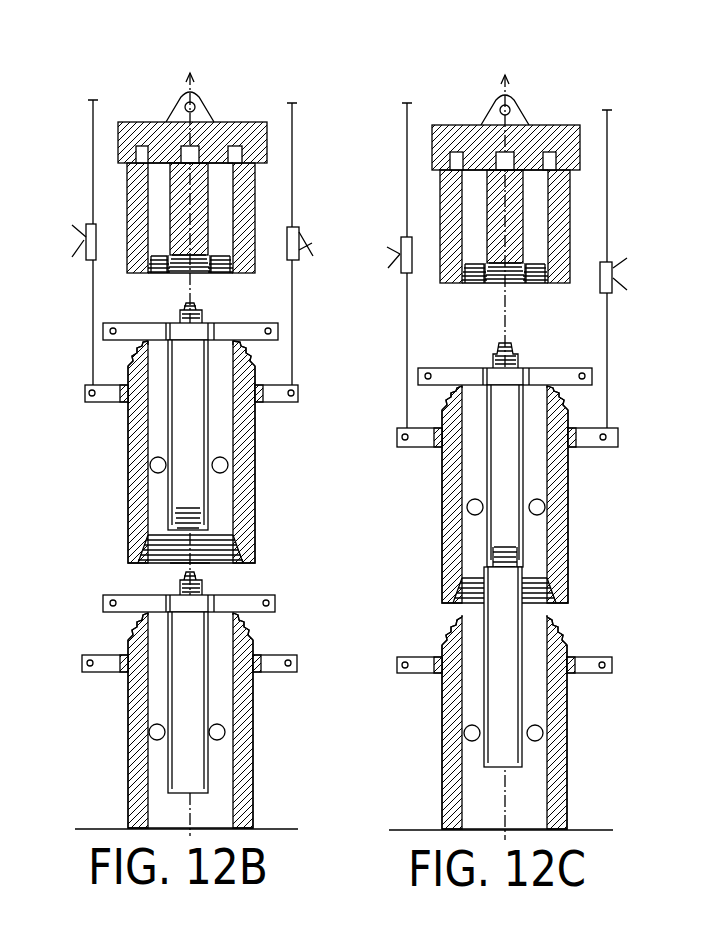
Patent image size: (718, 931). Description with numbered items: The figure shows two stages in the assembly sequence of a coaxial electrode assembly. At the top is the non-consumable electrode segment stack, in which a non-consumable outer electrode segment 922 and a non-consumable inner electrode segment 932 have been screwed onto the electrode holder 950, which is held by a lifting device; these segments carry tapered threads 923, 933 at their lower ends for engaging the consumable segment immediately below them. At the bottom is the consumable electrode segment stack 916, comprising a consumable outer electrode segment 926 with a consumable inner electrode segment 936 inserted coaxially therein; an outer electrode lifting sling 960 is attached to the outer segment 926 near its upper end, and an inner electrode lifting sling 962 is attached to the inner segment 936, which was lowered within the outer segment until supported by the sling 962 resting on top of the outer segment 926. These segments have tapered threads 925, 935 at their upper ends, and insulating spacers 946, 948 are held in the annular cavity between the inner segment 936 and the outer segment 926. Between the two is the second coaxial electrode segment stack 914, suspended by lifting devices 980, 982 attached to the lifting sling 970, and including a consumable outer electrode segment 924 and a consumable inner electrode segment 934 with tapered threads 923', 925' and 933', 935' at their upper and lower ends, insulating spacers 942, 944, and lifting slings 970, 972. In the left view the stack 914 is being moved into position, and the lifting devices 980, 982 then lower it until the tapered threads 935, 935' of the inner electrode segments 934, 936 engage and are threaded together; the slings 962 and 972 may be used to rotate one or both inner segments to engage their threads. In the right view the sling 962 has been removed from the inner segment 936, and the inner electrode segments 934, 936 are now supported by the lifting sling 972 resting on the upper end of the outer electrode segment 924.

In FIG. 12B, the second coaxial electrode segment stack 914 is at (118, 529).
In FIG. 12C, the second coaxial electrode segment stack 914 is at (616, 477).
In FIG. 12B, the consumable electrode segment stack 916 is at (266, 707).
In FIG. 12C, the consumable electrode segment stack 916 is at (586, 738).
In FIG. 12B, the non-consumable outer electrode segment 922 is at (127, 200).
In FIG. 12C, the non-consumable outer electrode segment 922 is at (441, 198).
In FIG. 12B, the tapered threads 923 is at (169, 278).
In FIG. 12C, the tapered threads 923 is at (484, 286).
In FIG. 12B, the tapered threads 923' is at (146, 358).
In FIG. 12C, the tapered threads 923' is at (456, 390).
In FIG. 12B, the consumable outer electrode segment 924 is at (128, 445).
In FIG. 12C, the consumable outer electrode segment 924 is at (442, 489).
In FIG. 12B, the tapered threads 925 is at (154, 628).
In FIG. 12C, the tapered threads 925 is at (468, 627).
In FIG. 12B, the tapered threads 925' is at (152, 561).
In FIG. 12C, the tapered threads 925' is at (463, 590).
In FIG. 12B, the consumable outer electrode segment 926 is at (128, 700).
In FIG. 12C, the consumable outer electrode segment 926 is at (442, 700).
In FIG. 12B, the non-consumable inner electrode segment 932 is at (250, 190).
In FIG. 12C, the non-consumable inner electrode segment 932 is at (562, 208).
In FIG. 12B, the tapered threads 933 is at (216, 231).
In FIG. 12C, the tapered threads 933 is at (535, 244).
In FIG. 12B, the tapered threads 933' is at (229, 313).
In FIG. 12C, the tapered threads 933' is at (543, 348).
In FIG. 12B, the consumable inner electrode segment 934 is at (208, 415).
In FIG. 12C, the consumable inner electrode segment 934 is at (523, 462).
In FIG. 12B, the tapered threads 935 is at (253, 587).
In FIG. 12C, the tapered threads 935 is at (566, 561).
In FIG. 12B, the tapered threads 935' is at (246, 560).
In FIG. 12B, the consumable inner electrode segment 936 is at (208, 680).
In FIG. 12C, the consumable inner electrode segment 936 is at (523, 688).
In FIG. 12B, the ball 942 is at (155, 477).
In FIG. 12C, the ball 942 is at (470, 517).
In FIG. 12B, the insulating spacer 944 is at (226, 471).
In FIG. 12C, the insulating spacer 944 is at (545, 513).
In FIG. 12B, the insulating spacer 946 is at (152, 740).
In FIG. 12C, the insulating spacer 946 is at (467, 741).
In FIG. 12B, the insulating spacer 948 is at (222, 742).
In FIG. 12C, the insulating spacer 948 is at (540, 742).
In FIG. 12B, the electrode holder 950 is at (232, 126).
In FIG. 12C, the electrode holder 950 is at (547, 125).
In FIG. 12B, the outer electrode lifting sling 960 is at (82, 664).
In FIG. 12C, the outer electrode lifting sling 960 is at (397, 665).
In FIG. 12B, the inner electrode lifting sling 962 is at (103, 603).
In FIG. 12B, the lifting sling 970 is at (85, 396).
In FIG. 12C, the lifting sling 970 is at (618, 431).
In FIG. 12B, the lifting sling 972 is at (151, 323).
In FIG. 12C, the lifting sling 972 is at (452, 367).
In FIG. 12B, the lifting device 980 is at (63, 242).
In FIG. 12C, the lifting device 980 is at (377, 265).
In FIG. 12B, the lifting device 982 is at (320, 244).
In FIG. 12C, the lifting device 982 is at (641, 269).